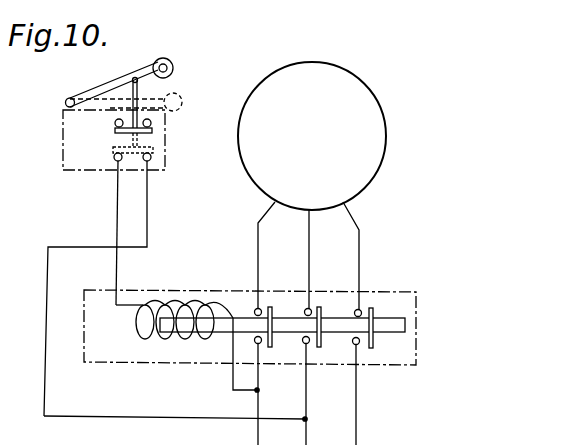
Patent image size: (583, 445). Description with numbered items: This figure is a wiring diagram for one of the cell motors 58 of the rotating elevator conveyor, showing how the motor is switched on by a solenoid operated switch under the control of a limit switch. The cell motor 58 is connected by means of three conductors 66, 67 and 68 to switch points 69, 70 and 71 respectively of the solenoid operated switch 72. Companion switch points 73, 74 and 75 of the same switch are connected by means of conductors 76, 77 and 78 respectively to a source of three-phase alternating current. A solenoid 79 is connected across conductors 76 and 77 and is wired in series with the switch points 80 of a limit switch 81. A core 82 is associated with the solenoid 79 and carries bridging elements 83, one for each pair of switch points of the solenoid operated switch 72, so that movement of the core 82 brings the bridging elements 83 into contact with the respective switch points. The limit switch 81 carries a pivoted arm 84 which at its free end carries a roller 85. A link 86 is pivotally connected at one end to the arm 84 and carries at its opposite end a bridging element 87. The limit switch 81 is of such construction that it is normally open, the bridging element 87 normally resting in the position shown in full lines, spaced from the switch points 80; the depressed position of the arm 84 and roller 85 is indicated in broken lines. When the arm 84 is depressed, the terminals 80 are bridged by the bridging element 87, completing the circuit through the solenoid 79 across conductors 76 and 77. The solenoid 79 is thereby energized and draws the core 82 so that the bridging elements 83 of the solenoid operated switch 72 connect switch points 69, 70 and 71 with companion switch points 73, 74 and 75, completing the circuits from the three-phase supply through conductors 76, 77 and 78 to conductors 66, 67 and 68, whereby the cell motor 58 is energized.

The cell motor 58 is at (373, 93).
The conductor 66 is at (257, 232).
The conductor 67 is at (310, 233).
The conductor 68 is at (357, 218).
The switch point 69 is at (263, 305).
The switch point 70 is at (312, 306).
The switch point 71 is at (361, 307).
The solenoid operated switch 72 is at (418, 312).
The companion switch point 73 is at (253, 344).
The companion switch point 74 is at (301, 343).
The companion switch point 75 is at (352, 344).
The conductor 76 is at (256, 404).
The conductor 77 is at (308, 401).
The conductor 78 is at (358, 392).
The solenoid 79 is at (186, 305).
The switch points 80 is at (145, 163).
The limit switch 81 is at (166, 150).
The core 82 is at (240, 316).
The bridging elements 83 is at (274, 314).
The pivoted arm 84 is at (108, 72).
The roller 85 is at (175, 62).
The link 86 is at (114, 118).
The bridging element 87 is at (118, 134).